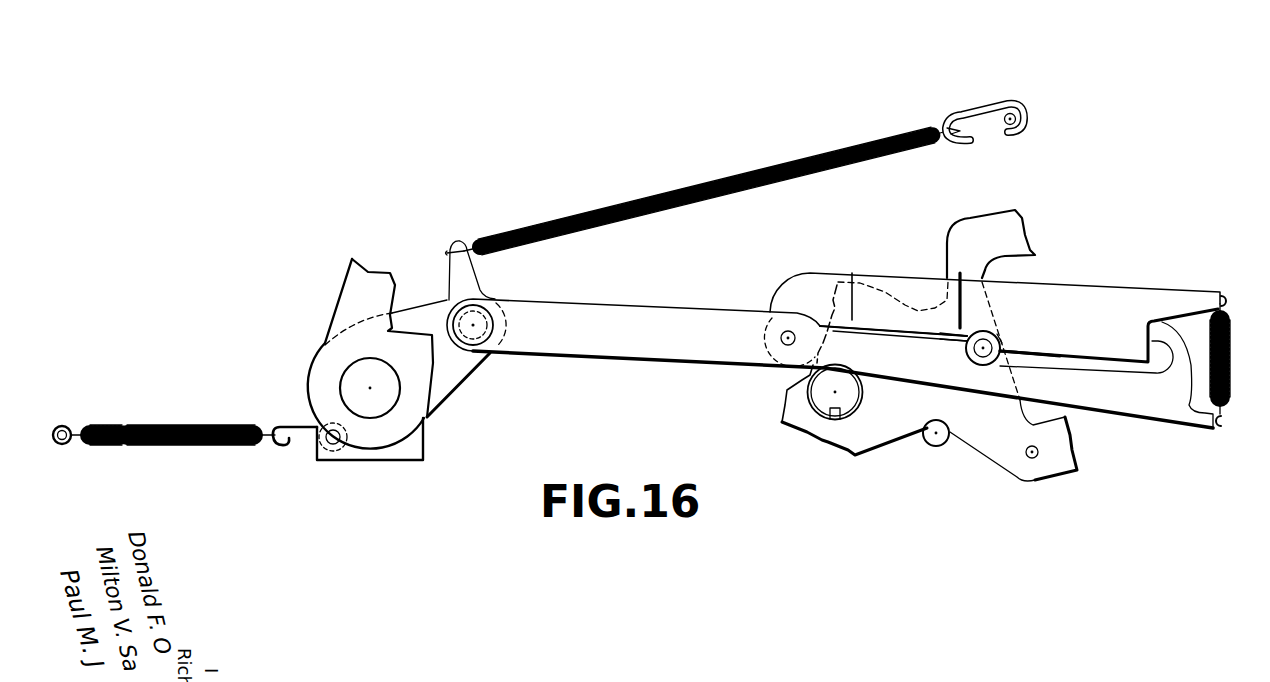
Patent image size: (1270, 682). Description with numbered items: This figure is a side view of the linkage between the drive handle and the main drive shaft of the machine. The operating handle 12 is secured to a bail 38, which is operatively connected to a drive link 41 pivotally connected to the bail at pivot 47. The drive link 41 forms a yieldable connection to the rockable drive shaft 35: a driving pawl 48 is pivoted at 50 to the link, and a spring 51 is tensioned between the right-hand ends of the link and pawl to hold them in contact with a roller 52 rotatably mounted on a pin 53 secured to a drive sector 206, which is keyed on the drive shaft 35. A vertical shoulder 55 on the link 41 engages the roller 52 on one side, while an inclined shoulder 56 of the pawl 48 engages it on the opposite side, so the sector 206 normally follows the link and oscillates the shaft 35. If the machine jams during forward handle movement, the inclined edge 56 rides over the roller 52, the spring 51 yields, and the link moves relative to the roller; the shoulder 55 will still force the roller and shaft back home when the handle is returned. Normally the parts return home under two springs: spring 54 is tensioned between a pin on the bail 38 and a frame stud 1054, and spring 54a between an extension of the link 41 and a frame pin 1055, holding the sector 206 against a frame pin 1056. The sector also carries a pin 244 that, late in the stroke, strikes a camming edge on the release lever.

The operating handle 12 is at (335, 317).
The bail 38 is at (413, 443).
The drive link 41 is at (615, 352).
The pivot 47 is at (478, 321).
The driving pawl 48 is at (1105, 263).
The pivot 50 is at (781, 338).
The spring 51 is at (1229, 360).
The roller 52 is at (1001, 343).
The pin 53 is at (983, 349).
The spring 54 is at (222, 426).
The spring 54a is at (688, 172).
The vertical shoulder 55 is at (965, 339).
The inclined shoulder 56 is at (1002, 348).
The drive shaft 35 is at (812, 382).
The drive sector 206 is at (887, 432).
The pin 244 is at (1040, 452).
The frame stud 1054 is at (68, 426).
The frame pin 1055 is at (1012, 112).
The frame pin 1056 is at (966, 474).